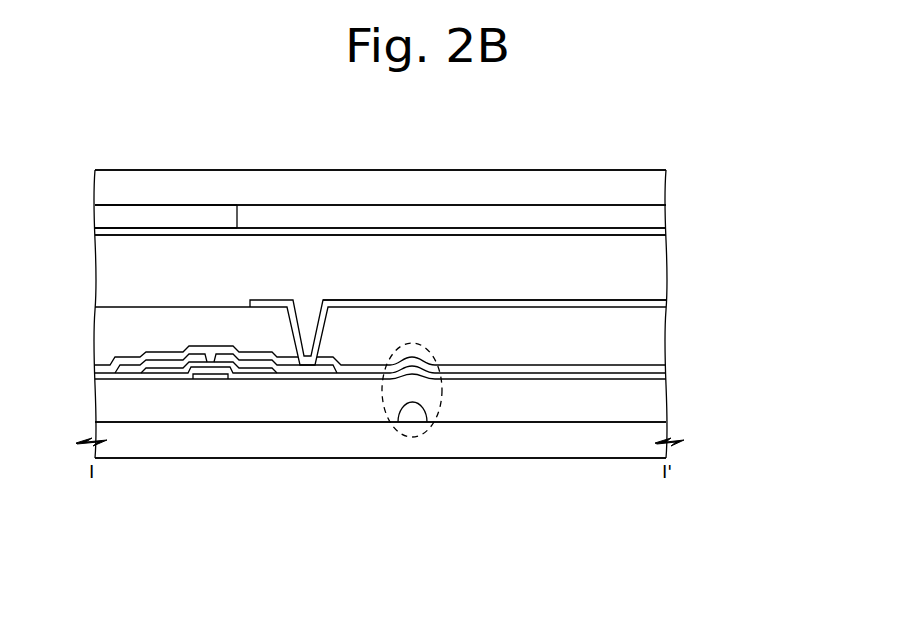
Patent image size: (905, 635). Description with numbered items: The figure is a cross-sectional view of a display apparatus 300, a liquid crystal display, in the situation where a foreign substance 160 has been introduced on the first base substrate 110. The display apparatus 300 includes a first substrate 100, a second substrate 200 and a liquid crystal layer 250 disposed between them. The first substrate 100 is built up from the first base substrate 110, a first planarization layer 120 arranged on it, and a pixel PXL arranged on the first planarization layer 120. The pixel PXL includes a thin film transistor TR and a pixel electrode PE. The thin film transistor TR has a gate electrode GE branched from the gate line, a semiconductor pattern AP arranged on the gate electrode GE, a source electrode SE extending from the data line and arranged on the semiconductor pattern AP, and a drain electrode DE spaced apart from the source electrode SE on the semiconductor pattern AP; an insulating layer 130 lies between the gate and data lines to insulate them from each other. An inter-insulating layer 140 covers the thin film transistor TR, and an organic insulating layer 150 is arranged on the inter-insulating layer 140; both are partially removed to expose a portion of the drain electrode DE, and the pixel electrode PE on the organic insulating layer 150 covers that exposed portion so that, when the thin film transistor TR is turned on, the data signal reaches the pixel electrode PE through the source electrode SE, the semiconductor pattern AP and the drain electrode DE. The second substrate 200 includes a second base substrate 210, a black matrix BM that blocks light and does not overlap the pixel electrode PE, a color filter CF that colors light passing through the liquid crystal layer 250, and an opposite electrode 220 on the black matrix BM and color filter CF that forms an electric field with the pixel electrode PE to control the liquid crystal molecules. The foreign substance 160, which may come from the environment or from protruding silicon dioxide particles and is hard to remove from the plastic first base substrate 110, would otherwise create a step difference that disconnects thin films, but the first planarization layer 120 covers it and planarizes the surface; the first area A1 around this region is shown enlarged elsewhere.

The display apparatus 300 is at (806, 448).
The second substrate 200 is at (748, 172).
The second base substrate 210 is at (658, 181).
The color filter CF is at (658, 215).
The black matrix BM is at (103, 218).
The opposite electrode 220 is at (658, 227).
The liquid crystal layer 250 is at (658, 258).
The first substrate 100 is at (747, 305).
The organic insulating layer 150 is at (657, 322).
The inter-insulating layer 140 is at (657, 366).
The insulating layer 130 is at (657, 372).
The first planarization layer 120 is at (657, 406).
The first base substrate 110 is at (657, 431).
The foreign substance 160 is at (411, 420).
The first area A1 is at (437, 353).
The pixel PXL is at (332, 550).
The thin film transistor TR is at (282, 510).
The pixel electrode PE is at (308, 363).
The source electrode SE is at (143, 371).
The semiconductor pattern AP is at (172, 369).
The gate electrode GE is at (210, 378).
The drain electrode DE is at (249, 363).